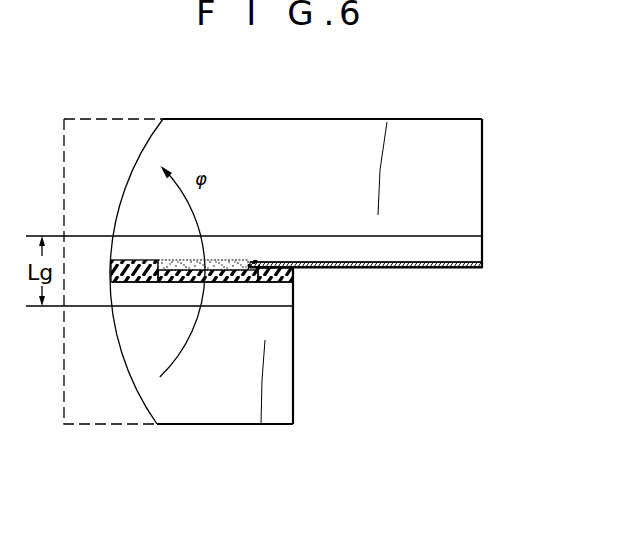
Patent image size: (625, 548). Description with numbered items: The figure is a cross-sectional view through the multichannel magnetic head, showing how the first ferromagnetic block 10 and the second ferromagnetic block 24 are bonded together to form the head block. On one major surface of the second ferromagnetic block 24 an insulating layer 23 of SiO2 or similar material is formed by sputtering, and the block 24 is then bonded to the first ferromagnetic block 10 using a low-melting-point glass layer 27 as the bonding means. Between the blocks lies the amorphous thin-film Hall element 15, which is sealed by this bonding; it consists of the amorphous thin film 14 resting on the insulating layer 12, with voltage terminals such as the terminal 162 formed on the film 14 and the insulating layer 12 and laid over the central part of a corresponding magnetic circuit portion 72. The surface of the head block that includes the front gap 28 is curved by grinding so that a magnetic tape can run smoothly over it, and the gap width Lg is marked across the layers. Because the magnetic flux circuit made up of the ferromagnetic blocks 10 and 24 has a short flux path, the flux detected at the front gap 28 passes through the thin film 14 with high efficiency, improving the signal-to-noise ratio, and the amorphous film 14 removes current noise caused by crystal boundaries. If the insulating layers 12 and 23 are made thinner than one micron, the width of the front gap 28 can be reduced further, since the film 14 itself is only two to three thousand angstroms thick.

The first ferromagnetic block 10 is at (482, 197).
The insulating layer 12 is at (470, 253).
The voltage terminal 162 is at (448, 268).
The amorphous thin film 14 is at (220, 260).
The amorphous thin-film Hall element 15 is at (220, 286).
The glass layer 27 is at (295, 277).
The insulating layer 23 is at (287, 300).
The second ferromagnetic block 24 is at (293, 390).
The front gap 28 is at (102, 266).
The magnetic circuit portion 72 is at (250, 128).